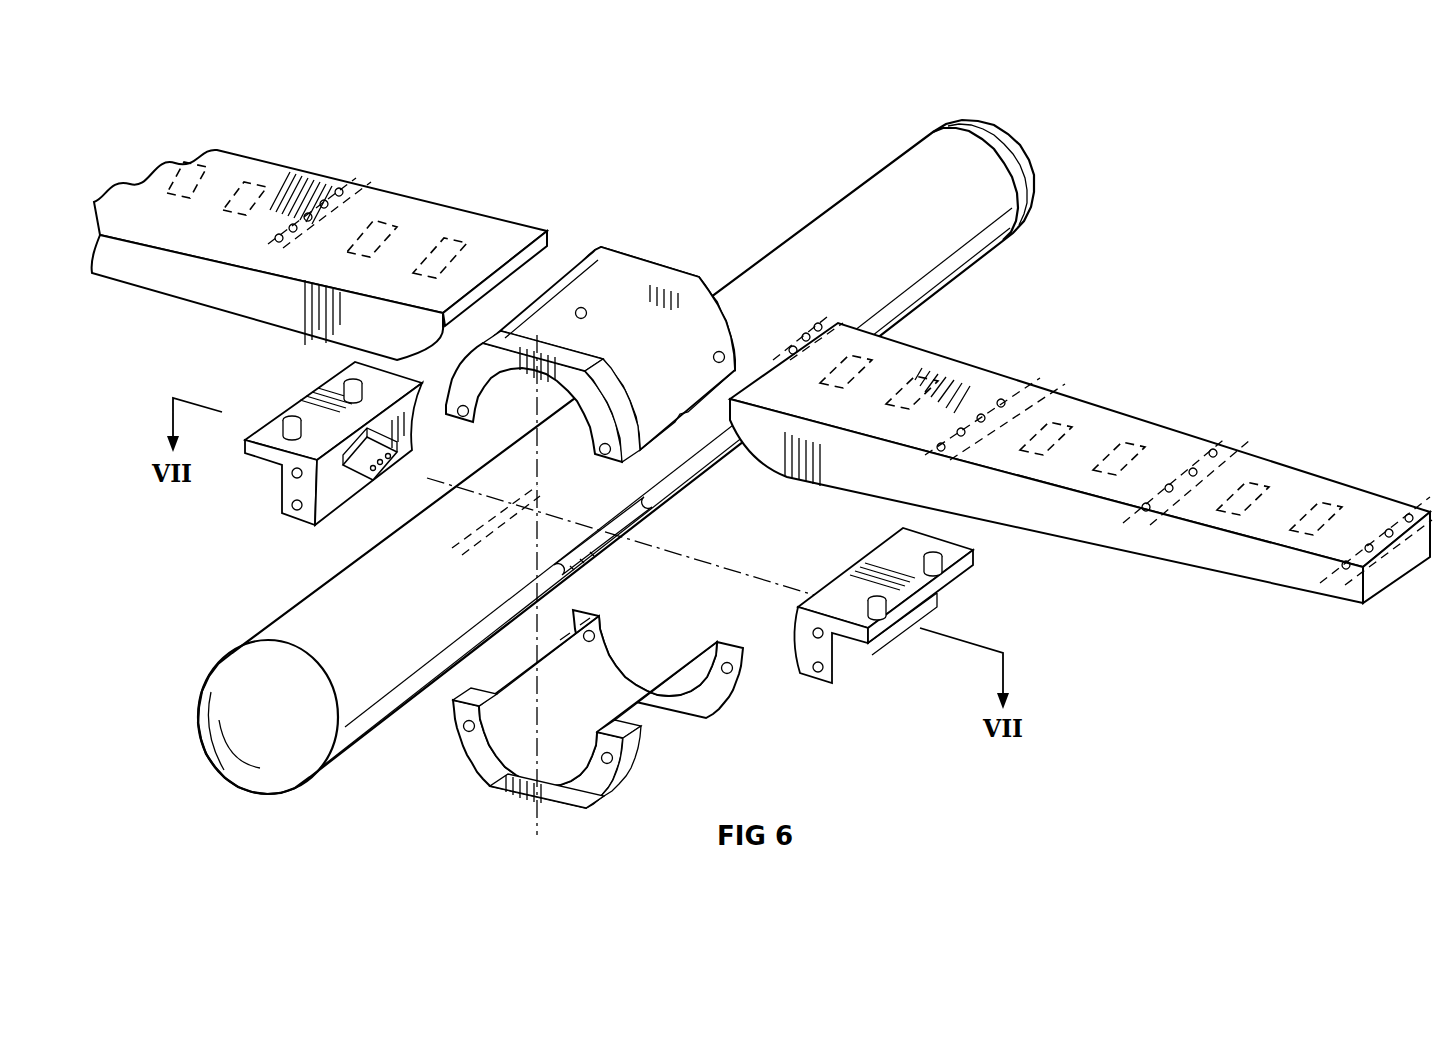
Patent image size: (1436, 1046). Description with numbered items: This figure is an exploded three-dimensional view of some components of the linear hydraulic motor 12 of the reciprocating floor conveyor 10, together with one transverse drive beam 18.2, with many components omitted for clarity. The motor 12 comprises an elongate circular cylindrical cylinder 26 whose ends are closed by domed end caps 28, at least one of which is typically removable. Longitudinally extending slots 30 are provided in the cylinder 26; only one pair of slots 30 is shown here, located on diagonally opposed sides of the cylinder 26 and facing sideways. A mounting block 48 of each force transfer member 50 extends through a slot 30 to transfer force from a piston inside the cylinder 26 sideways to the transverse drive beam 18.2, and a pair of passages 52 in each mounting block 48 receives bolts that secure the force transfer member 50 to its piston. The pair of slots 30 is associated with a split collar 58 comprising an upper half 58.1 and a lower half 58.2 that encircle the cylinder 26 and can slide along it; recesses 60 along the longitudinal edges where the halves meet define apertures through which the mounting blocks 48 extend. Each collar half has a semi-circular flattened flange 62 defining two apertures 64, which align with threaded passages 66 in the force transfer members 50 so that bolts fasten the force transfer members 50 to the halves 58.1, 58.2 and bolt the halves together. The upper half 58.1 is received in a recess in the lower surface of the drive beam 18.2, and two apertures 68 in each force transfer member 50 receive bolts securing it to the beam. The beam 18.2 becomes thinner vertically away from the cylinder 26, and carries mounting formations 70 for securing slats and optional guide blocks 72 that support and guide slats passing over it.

The reciprocating floor conveyor 10 is at (1110, 150).
The linear hydraulic motor 12 is at (586, 429).
The transverse drive beam 18.2 is at (1087, 423).
The cylinder 26 is at (952, 292).
The domed end cap 28 is at (1003, 148).
The slot 30 is at (632, 520).
The mounting block 48 is at (372, 472).
The force transfer member 50 is at (592, 533).
The passages 52 is at (383, 481).
The split collar 58 is at (594, 537).
The upper half 58.1 is at (662, 305).
The lower half 58.2 is at (530, 785).
The recess 60 is at (657, 407).
The semi-circular flattened flange 62 is at (693, 270).
The aperture 64 is at (567, 310).
The threaded passage 66 is at (292, 503).
The aperture 68 is at (288, 418).
The mounting formation 70 is at (319, 239).
The guide block 72 is at (383, 225).